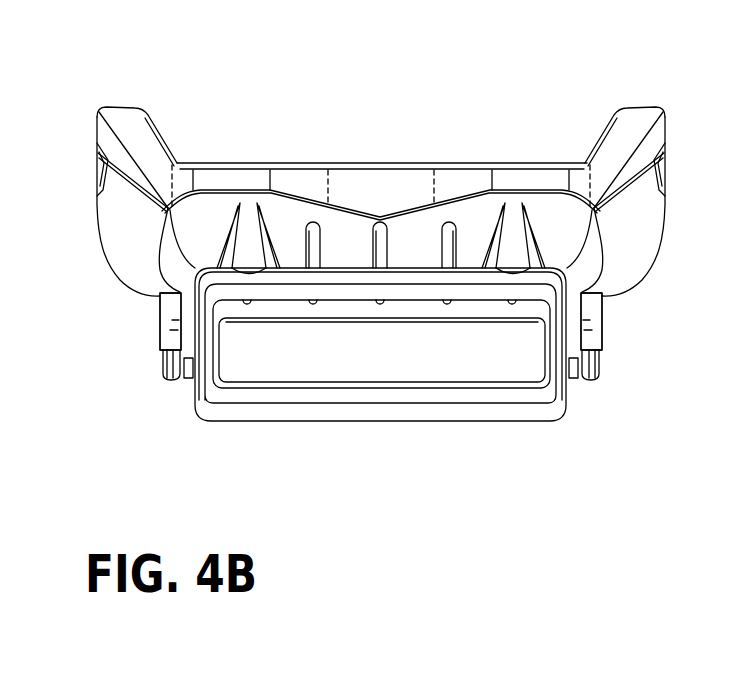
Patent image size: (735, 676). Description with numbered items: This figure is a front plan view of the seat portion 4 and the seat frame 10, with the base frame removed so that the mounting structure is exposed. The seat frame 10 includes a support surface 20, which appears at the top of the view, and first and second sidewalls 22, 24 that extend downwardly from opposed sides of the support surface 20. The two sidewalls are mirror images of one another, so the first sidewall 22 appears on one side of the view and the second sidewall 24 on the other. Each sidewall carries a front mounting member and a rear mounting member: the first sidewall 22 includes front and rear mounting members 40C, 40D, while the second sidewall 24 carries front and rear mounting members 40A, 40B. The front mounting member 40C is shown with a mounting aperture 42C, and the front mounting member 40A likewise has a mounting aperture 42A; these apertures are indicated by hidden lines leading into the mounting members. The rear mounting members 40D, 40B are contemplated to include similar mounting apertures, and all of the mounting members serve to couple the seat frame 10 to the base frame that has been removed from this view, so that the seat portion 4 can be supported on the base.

The seat portion 4 is at (284, 102).
The support surface 20 is at (346, 282).
The seat frame 10 is at (346, 305).
The mounting aperture 42C is at (173, 322).
The mounting aperture 42A is at (589, 322).
The front mounting member 40C is at (154, 347).
The front mounting member 40A is at (606, 347).
The first sidewall 22 is at (157, 386).
The rear mounting member 40D is at (185, 386).
The rear mounting member 40B is at (578, 384).
The second sidewall 24 is at (613, 387).